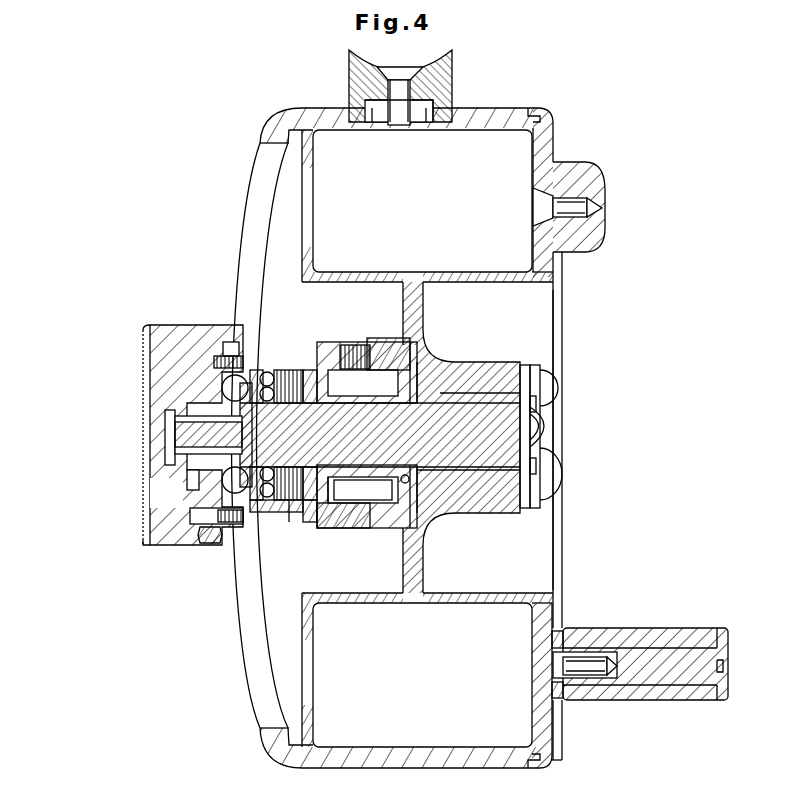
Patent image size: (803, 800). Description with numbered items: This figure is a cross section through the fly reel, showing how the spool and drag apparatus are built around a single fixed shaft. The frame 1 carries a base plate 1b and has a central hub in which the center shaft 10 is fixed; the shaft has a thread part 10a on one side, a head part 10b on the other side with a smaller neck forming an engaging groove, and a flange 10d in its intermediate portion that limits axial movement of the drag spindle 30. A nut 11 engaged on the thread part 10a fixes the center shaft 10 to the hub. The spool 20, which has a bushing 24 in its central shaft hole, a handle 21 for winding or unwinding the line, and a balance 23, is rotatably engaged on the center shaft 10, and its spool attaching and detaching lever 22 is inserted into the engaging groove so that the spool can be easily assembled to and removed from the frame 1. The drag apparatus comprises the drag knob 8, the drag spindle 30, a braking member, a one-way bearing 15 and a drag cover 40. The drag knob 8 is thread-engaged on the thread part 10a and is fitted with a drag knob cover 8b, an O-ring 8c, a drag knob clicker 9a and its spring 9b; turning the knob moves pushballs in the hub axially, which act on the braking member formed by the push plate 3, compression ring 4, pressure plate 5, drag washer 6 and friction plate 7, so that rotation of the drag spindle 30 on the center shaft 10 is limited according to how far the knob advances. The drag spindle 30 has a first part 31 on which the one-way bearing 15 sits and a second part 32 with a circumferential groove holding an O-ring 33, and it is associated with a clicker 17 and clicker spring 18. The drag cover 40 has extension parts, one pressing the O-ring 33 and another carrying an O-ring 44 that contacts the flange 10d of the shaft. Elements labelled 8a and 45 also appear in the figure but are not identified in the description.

The frame 1 is at (290, 126).
The base plate 1b is at (440, 80).
The push plate 3 is at (256, 348).
The compression ring 4 is at (267, 352).
The pressure plate 5 is at (308, 342).
The drag washer 6 is at (281, 354).
The friction plate 7 is at (289, 524).
The drag knob 8 is at (176, 335).
The bolt 8a is at (166, 452).
The drag knob cover 8b is at (166, 433).
The O-ring 8c is at (225, 343).
The drag knob clicker 9a is at (198, 527).
The spring 9b is at (226, 530).
The center shaft 10 is at (480, 455).
The thread part 10a is at (210, 418).
The head part 10b is at (538, 446).
The flange 10d is at (420, 470).
The nut 11 is at (190, 488).
The one-way bearing 15 is at (350, 495).
The clicker 17 is at (343, 358).
The clicker spring 18 is at (372, 350).
The spool 20 is at (565, 265).
The handle 21 is at (655, 672).
The spool attaching and detaching lever 22 is at (545, 406).
The balance 23 is at (597, 183).
The bushing 24 is at (462, 366).
The drag spindle 30 is at (322, 512).
The first part 31 is at (328, 508).
The second part 32 is at (296, 514).
The O-ring 33 is at (316, 522).
The drag cover 40 is at (328, 348).
The O-ring 44 is at (408, 483).
The web 45 is at (418, 340).